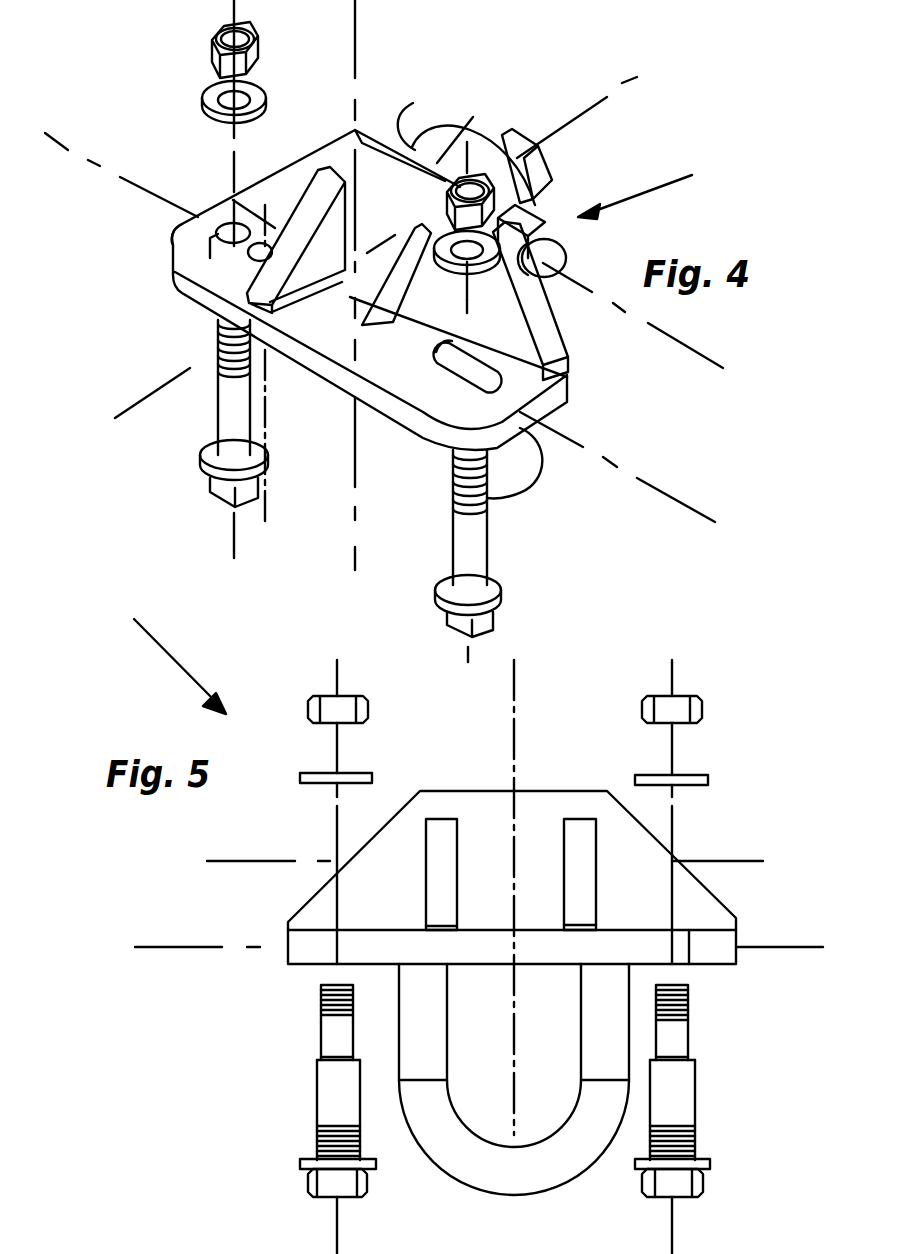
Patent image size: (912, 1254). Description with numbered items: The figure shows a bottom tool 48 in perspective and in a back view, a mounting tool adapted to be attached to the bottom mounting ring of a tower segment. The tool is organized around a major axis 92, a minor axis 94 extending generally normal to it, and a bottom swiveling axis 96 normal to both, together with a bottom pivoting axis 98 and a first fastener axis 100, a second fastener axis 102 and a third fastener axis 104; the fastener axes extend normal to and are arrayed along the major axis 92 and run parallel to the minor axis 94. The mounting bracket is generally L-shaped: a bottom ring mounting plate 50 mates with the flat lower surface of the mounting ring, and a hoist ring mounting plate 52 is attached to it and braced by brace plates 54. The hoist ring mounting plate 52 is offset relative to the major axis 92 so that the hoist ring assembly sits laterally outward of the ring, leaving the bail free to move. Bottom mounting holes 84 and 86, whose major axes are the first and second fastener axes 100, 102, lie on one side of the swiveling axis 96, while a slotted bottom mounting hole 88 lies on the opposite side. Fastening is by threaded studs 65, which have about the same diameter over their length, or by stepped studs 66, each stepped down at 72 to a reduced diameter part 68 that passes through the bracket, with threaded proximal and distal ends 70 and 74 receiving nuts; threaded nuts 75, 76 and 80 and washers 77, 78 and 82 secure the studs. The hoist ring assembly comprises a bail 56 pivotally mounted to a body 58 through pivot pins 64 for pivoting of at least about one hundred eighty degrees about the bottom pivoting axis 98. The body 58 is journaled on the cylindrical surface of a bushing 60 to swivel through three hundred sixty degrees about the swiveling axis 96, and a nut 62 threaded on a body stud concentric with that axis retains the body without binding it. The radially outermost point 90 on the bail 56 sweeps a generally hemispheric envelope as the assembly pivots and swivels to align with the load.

In FIG. 4, the bottom tool 48 is at (653, 190).
In FIG. 5, the bottom tool 48 is at (163, 653).
In FIG. 4, the bottom ring mounting plate 50 is at (420, 430).
In FIG. 5, the bottom ring mounting plate 50 is at (287, 963).
In FIG. 4, the hoist ring mounting plate 52 is at (292, 158).
In FIG. 5, the hoist ring mounting plate 52 is at (497, 791).
In FIG. 4, the brace plates 54 is at (304, 250).
In FIG. 5, the brace plates 54 is at (426, 872).
In FIG. 4, the bail 56 is at (522, 475).
In FIG. 5, the bail 56 is at (560, 1185).
In FIG. 4, the body 58 is at (413, 103).
In FIG. 4, the bushing 60 is at (462, 138).
In FIG. 4, the nut 62 is at (549, 170).
In FIG. 4, the pivot pins 64 is at (566, 250).
In FIG. 4, the studs 65 is at (218, 418).
In FIG. 5, the studs 66 is at (317, 1085).
In FIG. 5, the reduced diameter part 68 is at (321, 1036).
In FIG. 5, the threaded proximal end 70 is at (321, 1000).
In FIG. 5, the step 72 is at (317, 1060).
In FIG. 5, the threaded distal end 74 is at (317, 1138).
In FIG. 4, the threaded nut 75 is at (210, 490).
In FIG. 5, the threaded nut 76 is at (308, 1188).
In FIG. 4, the washer 77 is at (205, 457).
In FIG. 5, the washer 78 is at (300, 1164).
In FIG. 4, the threaded nut 80 is at (212, 62).
In FIG. 5, the threaded nut 80 is at (368, 711).
In FIG. 4, the washer 82 is at (203, 109).
In FIG. 5, the washer 82 is at (300, 778).
In FIG. 4, the bottom mounting hole 84 is at (173, 251).
In FIG. 4, the bottom mounting hole 86 is at (196, 300).
In FIG. 4, the slotted bottom mounting hole 88 is at (423, 357).
In FIG. 5, the radially outermost point 90 is at (514, 1196).
In FIG. 4, the major axis 92 is at (693, 512).
In FIG. 5, the major axis 92 is at (170, 947).
In FIG. 4, the minor axis 94 is at (355, 76).
In FIG. 5, the minor axis 94 is at (514, 1013).
In FIG. 4, the bottom swiveling axis 96 is at (598, 102).
In FIG. 5, the bottom swiveling axis 96 is at (514, 863).
In FIG. 4, the bottom pivoting axis 98 is at (688, 352).
In FIG. 5, the bottom pivoting axis 98 is at (235, 861).
In FIG. 4, the first fastener axis 100 is at (233, 167).
In FIG. 5, the first fastener axis 100 is at (337, 838).
In FIG. 4, the second fastener axis 102 is at (266, 406).
In FIG. 4, the third fastener axis 104 is at (473, 323).
In FIG. 5, the third fastener axis 104 is at (673, 823).